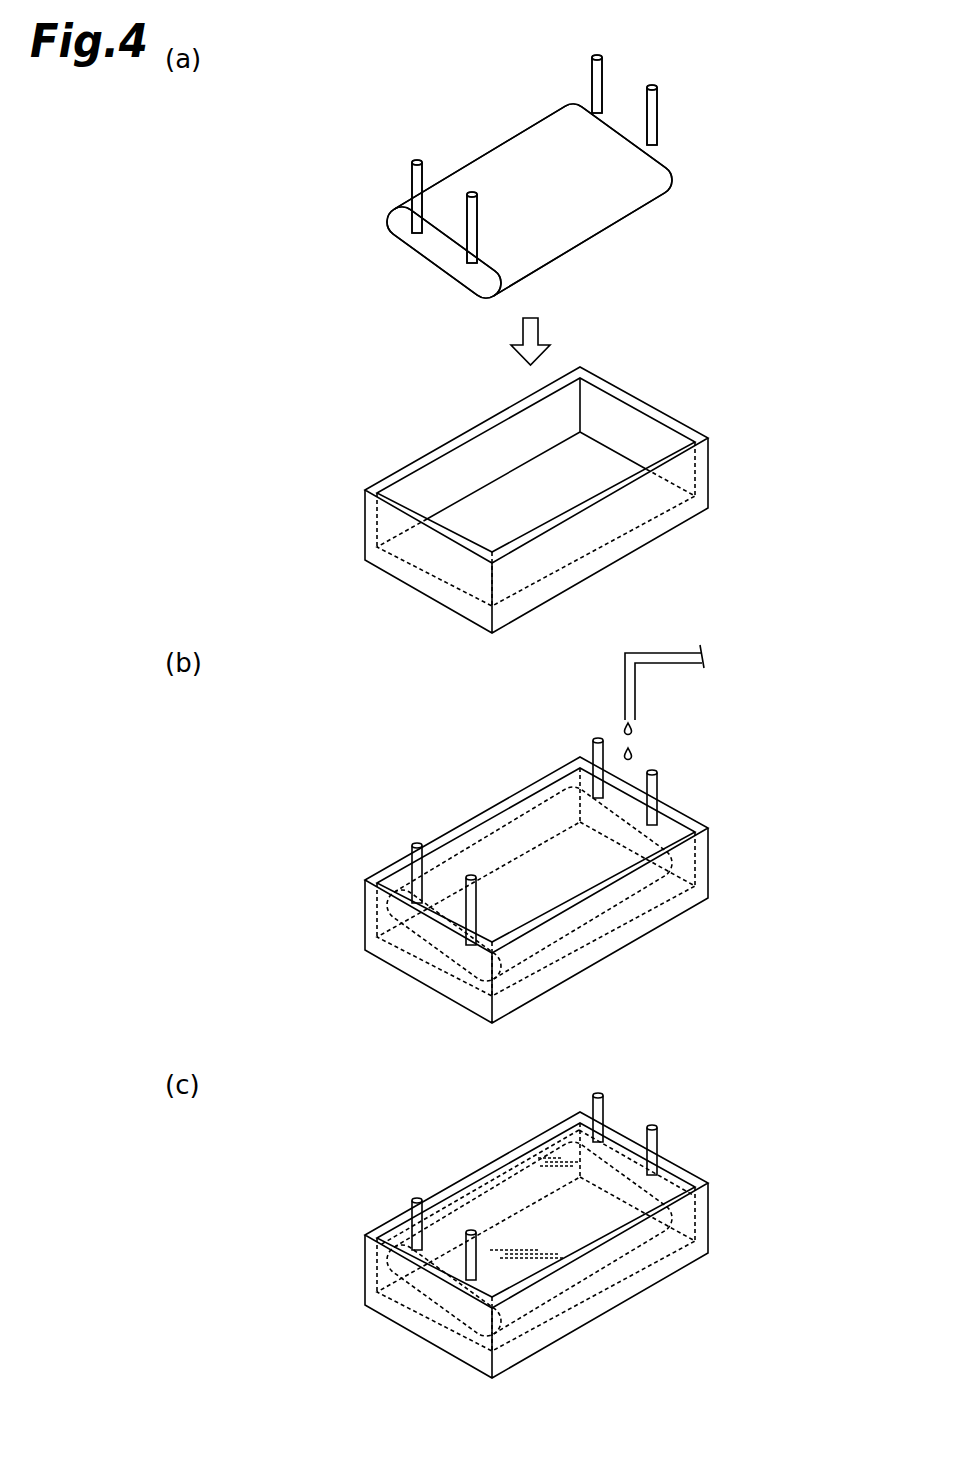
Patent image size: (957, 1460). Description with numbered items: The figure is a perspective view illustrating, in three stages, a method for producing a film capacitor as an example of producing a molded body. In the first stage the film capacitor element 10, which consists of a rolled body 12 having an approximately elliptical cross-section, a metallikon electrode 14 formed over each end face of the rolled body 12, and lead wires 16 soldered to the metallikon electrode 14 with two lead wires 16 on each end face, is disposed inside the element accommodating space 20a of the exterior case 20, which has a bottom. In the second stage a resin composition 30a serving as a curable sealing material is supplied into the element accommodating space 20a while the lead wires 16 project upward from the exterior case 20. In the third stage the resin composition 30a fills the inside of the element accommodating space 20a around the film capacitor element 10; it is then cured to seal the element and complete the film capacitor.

The film capacitor element 10 is at (643, 74).
The rolled body 12 is at (570, 215).
The metallikon electrode 14 is at (440, 267).
The lead wire 16 is at (595, 77).
The exterior case 20 is at (712, 470).
The element accommodating space 20a is at (652, 426).
The resin composition 30a is at (636, 755).